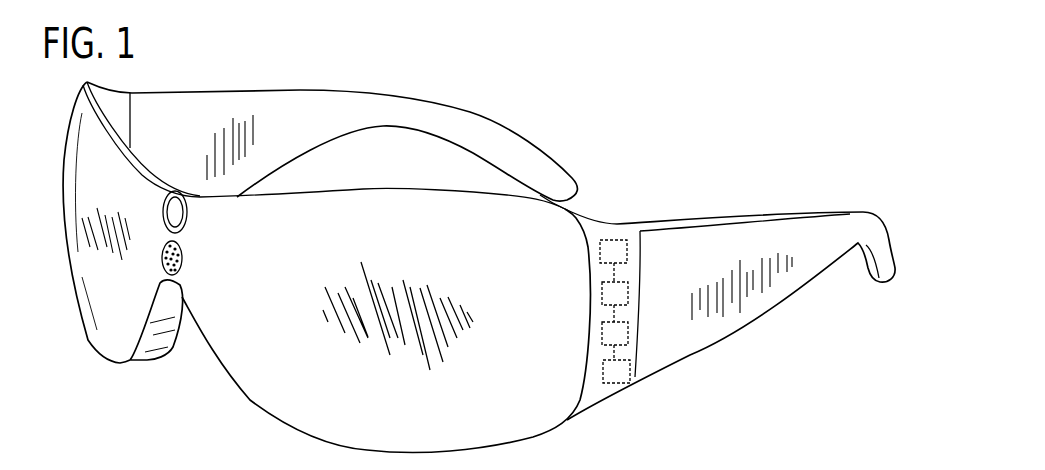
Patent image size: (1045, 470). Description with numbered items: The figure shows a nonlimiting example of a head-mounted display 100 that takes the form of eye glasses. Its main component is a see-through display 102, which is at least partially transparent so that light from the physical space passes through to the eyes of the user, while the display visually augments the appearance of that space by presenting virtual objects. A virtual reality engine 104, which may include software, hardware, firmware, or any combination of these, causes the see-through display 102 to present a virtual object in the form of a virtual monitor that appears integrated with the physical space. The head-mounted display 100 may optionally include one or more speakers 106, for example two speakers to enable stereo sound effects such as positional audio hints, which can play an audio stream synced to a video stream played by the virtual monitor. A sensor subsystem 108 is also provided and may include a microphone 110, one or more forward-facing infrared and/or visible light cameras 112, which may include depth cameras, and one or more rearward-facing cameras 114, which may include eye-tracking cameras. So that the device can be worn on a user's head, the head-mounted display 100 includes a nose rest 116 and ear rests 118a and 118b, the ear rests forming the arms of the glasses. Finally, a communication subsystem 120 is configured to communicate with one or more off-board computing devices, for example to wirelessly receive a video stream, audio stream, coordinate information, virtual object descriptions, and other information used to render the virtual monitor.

The head-mounted display 100 is at (510, 103).
The see-through display 102 is at (273, 390).
The virtual reality engine 104 is at (641, 280).
The speakers 106 is at (627, 293).
The sensor subsystem 108 is at (731, 279).
The microphone 110 is at (628, 333).
The forward-facing cameras 112 is at (195, 218).
The rearward-facing cameras 114 is at (190, 265).
The nose rest 116 is at (158, 333).
The ear rest 118a is at (468, 150).
The ear rest 118b is at (864, 262).
The communication subsystem 120 is at (625, 370).